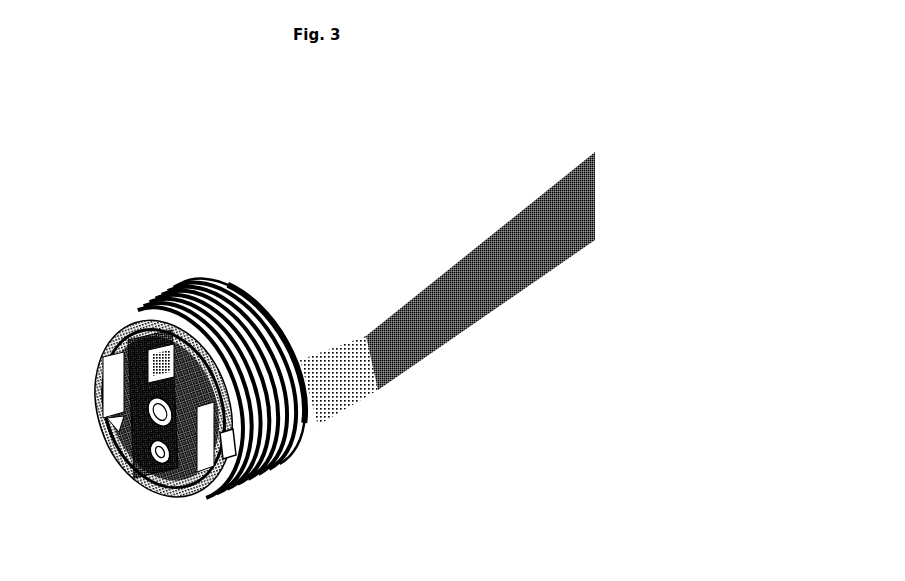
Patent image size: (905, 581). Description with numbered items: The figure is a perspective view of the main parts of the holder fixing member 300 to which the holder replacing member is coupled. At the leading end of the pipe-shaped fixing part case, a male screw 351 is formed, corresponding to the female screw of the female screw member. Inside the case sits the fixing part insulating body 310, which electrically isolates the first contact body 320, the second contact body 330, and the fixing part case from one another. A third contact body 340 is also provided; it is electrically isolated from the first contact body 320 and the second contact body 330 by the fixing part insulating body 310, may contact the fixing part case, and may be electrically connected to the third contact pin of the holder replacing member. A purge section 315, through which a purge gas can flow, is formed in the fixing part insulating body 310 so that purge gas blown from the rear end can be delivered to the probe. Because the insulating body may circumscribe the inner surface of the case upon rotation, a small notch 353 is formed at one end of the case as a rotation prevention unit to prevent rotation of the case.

The holder fixing member 300 is at (266, 189).
The fixing part insulating body 310 is at (132, 353).
The purge section 315 is at (112, 385).
The first contact body 320 is at (168, 428).
The second contact body 330 is at (164, 458).
The third contact body 340 is at (152, 378).
The male screw 351 is at (163, 307).
The notch 353 is at (233, 446).